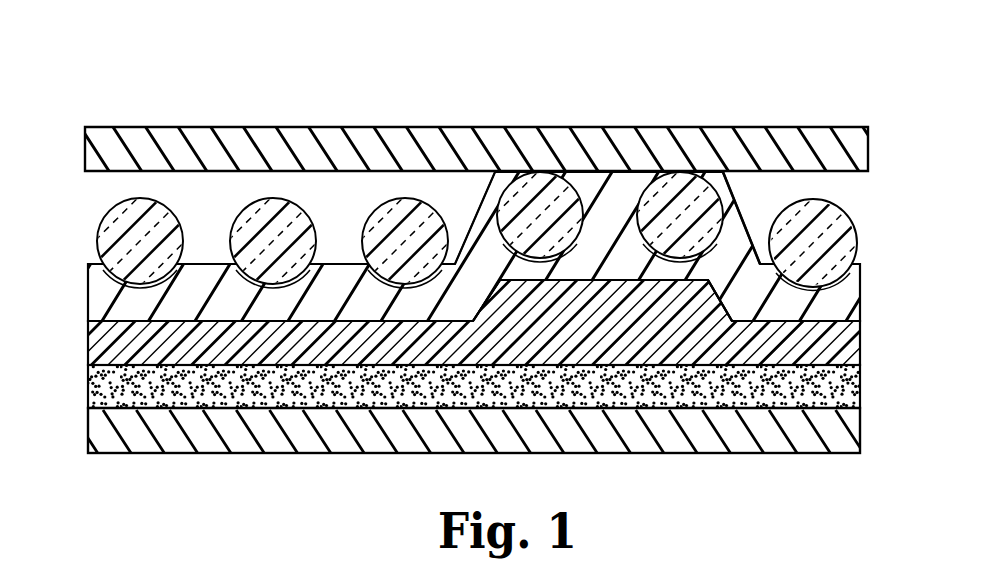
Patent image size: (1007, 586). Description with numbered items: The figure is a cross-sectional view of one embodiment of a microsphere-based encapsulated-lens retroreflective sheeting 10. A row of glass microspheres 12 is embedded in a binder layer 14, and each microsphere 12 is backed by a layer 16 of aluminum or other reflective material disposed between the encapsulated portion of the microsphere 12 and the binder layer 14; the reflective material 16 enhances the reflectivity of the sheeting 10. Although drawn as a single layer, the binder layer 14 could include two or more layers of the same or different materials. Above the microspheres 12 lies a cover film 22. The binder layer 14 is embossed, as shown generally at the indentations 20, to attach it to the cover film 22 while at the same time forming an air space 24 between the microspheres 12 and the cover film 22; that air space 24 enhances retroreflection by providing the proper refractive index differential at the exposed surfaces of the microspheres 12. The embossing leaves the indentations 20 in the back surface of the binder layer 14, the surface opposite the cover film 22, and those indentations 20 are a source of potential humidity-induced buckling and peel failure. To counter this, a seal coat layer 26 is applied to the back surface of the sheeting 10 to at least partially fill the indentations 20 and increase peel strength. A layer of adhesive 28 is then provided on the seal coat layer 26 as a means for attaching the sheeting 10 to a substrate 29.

The encapsulated-lens retroreflective sheeting 10 is at (645, 94).
The glass microspheres 12 is at (229, 236).
The binder layer 14 is at (102, 301).
The layer of aluminum or other reflective material 16 is at (362, 292).
The indentations 20 is at (562, 281).
The cover film 22 is at (373, 150).
The air space 24 is at (452, 187).
The seal coat layer 26 is at (112, 343).
The layer of adhesive 28 is at (105, 382).
The substrate 29 is at (108, 427).